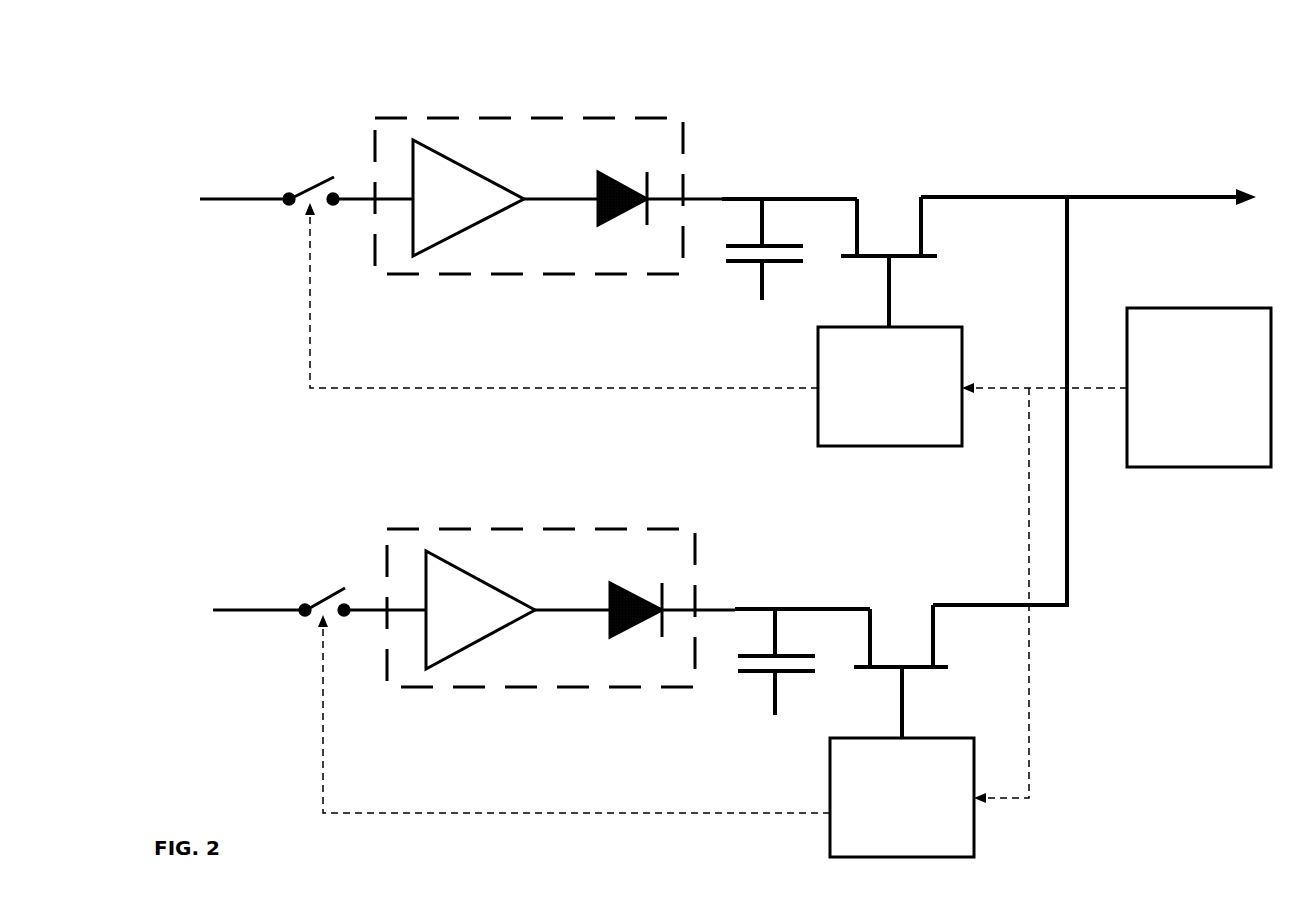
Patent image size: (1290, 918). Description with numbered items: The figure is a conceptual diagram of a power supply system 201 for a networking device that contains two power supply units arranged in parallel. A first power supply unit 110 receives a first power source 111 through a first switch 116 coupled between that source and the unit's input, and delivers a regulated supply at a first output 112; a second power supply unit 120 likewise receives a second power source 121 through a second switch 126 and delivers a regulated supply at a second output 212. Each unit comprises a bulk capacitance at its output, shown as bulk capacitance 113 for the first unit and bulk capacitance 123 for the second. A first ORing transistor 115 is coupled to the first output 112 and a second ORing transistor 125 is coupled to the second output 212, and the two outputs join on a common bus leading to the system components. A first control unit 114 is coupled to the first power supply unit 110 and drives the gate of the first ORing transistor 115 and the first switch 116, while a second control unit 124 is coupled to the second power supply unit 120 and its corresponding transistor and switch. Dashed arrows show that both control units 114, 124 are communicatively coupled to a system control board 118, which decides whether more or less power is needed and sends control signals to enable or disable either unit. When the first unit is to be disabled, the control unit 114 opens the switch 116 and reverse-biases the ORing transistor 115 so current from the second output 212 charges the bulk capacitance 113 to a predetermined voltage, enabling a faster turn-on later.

The power supply system 201 is at (941, 85).
The first power supply unit 110 is at (529, 118).
The first power source 111 is at (200, 341).
The first output 112 is at (721, 199).
The bulk capacitance 113 is at (747, 285).
The first control unit 114 is at (872, 421).
The first ORing transistor 115 is at (952, 277).
The first switch 116 is at (291, 165).
The system control board 118 is at (1181, 433).
The second power supply unit 120 is at (469, 524).
The second power source 121 is at (209, 751).
The second output 212 is at (735, 609).
The bulk capacitance 123 is at (757, 698).
The second control unit 124 is at (884, 832).
The second ORing transistor 125 is at (901, 577).
The second switch 126 is at (293, 576).